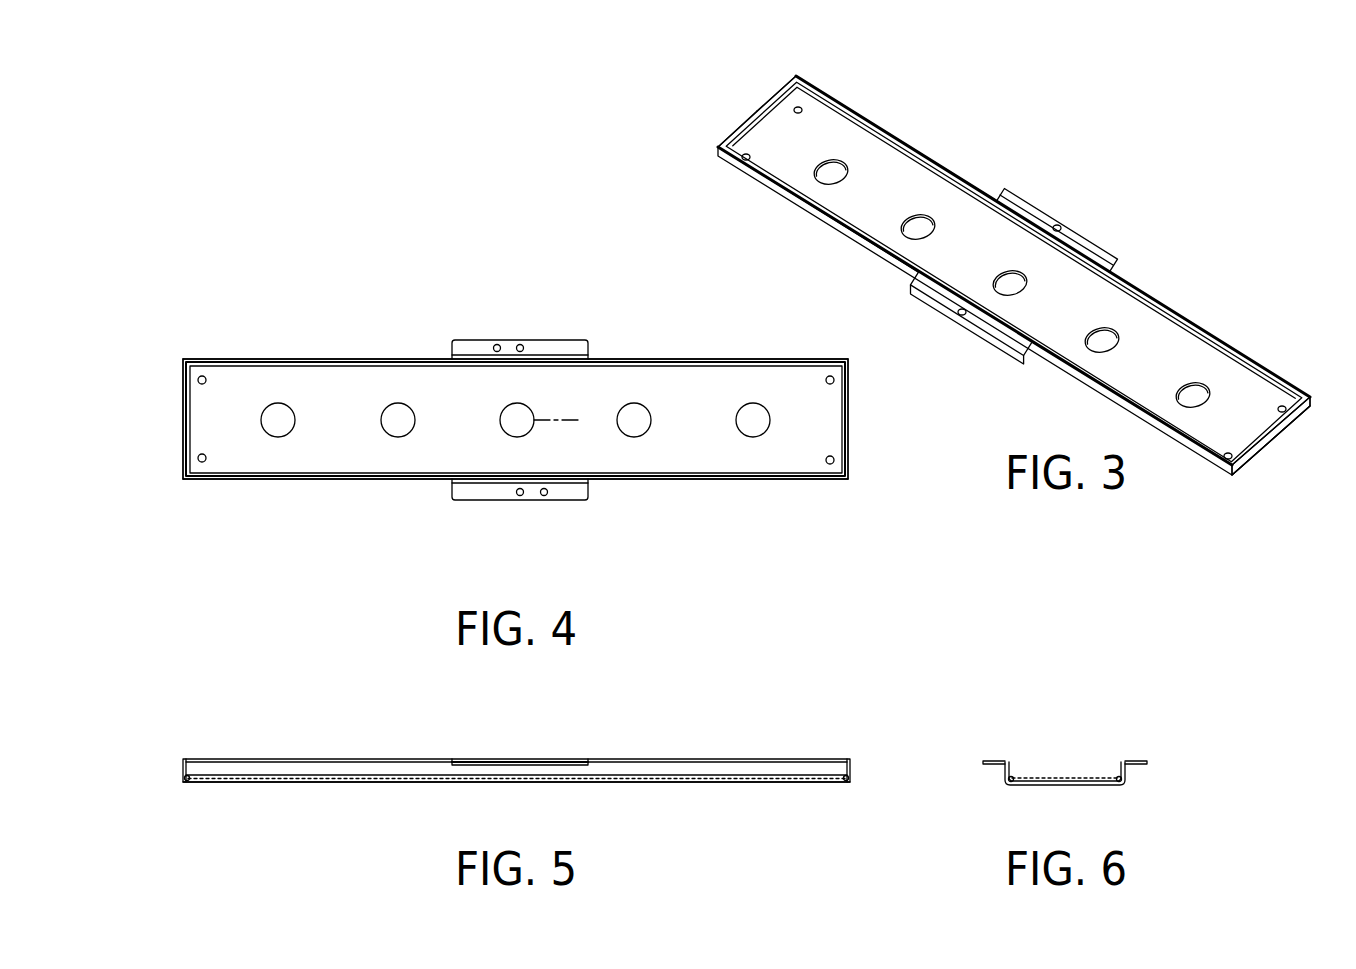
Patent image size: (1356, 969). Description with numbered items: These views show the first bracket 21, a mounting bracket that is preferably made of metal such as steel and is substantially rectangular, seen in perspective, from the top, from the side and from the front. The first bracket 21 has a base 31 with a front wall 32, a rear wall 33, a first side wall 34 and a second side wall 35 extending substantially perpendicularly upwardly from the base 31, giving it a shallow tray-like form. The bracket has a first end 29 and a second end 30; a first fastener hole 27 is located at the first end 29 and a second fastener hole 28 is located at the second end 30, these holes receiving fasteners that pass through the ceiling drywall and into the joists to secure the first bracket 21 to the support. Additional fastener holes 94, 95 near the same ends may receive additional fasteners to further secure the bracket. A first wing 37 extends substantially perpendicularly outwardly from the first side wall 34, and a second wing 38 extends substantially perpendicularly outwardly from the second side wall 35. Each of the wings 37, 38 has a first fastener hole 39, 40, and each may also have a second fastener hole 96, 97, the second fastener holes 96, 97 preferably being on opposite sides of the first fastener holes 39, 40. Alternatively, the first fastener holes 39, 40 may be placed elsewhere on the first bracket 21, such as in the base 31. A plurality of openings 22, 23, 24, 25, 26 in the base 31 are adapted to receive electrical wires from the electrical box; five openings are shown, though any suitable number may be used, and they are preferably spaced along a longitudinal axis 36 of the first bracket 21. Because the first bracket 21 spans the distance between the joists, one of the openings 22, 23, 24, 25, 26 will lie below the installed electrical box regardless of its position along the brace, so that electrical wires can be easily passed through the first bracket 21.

In FIG. 3, the first bracket 21 is at (920, 146).
In FIG. 4, the first bracket 21 is at (672, 356).
In FIG. 5, the first bracket 21 is at (724, 758).
In FIG. 6, the first bracket 21 is at (1031, 760).
In FIG. 3, the opening 22 is at (848, 172).
In FIG. 4, the opening 22 is at (293, 410).
In FIG. 3, the opening 23 is at (935, 227).
In FIG. 4, the opening 23 is at (383, 428).
In FIG. 3, the opening 24 is at (1027, 283).
In FIG. 4, the opening 24 is at (502, 430).
In FIG. 3, the opening 25 is at (1119, 340).
In FIG. 4, the opening 25 is at (619, 412).
In FIG. 3, the opening 26 is at (1176, 395).
In FIG. 4, the opening 26 is at (738, 430).
In FIG. 3, the first fastener hole 27 is at (750, 158).
In FIG. 4, the first fastener hole 27 is at (206, 456).
In FIG. 3, the second fastener hole 28 is at (1226, 454).
In FIG. 4, the second fastener hole 28 is at (826, 457).
In FIG. 3, the first end 29 is at (738, 123).
In FIG. 4, the first end 29 is at (183, 428).
In FIG. 5, the first end 29 is at (183, 772).
In FIG. 3, the second end 30 is at (1262, 448).
In FIG. 4, the second end 30 is at (848, 428).
In FIG. 5, the second end 30 is at (850, 770).
In FIG. 6, the second end 30 is at (1108, 784).
In FIG. 3, the base 31 is at (823, 192).
In FIG. 4, the base 31 is at (712, 380).
In FIG. 5, the base 31 is at (794, 777).
In FIG. 6, the base 31 is at (1070, 778).
In FIG. 3, the front wall 32 is at (776, 93).
In FIG. 3, the rear wall 33 is at (1292, 428).
In FIG. 3, the first side wall 34 is at (884, 257).
In FIG. 4, the first side wall 34 is at (330, 480).
In FIG. 5, the first side wall 34 is at (657, 783).
In FIG. 3, the second side wall 35 is at (998, 180).
In FIG. 4, the second side wall 35 is at (330, 358).
In FIG. 4, the longitudinal axis 36 is at (567, 421).
In FIG. 3, the first wing 37 is at (978, 335).
In FIG. 4, the first wing 37 is at (480, 500).
In FIG. 5, the first wing 37 is at (574, 760).
In FIG. 6, the first wing 37 is at (990, 760).
In FIG. 3, the second wing 38 is at (1102, 242).
In FIG. 4, the second wing 38 is at (575, 340).
In FIG. 6, the second wing 38 is at (1140, 760).
In FIG. 4, the first fastener hole 39 is at (520, 496).
In FIG. 3, the first fastener hole 40 is at (1060, 226).
In FIG. 4, the first fastener hole 40 is at (522, 345).
In FIG. 3, the additional fastener hole 94 is at (801, 113).
In FIG. 4, the additional fastener hole 94 is at (206, 383).
In FIG. 3, the additional fastener hole 95 is at (1279, 408).
In FIG. 4, the additional fastener hole 95 is at (826, 383).
In FIG. 4, the second fastener hole 96 is at (497, 344).
In FIG. 4, the second fastener hole 97 is at (546, 496).